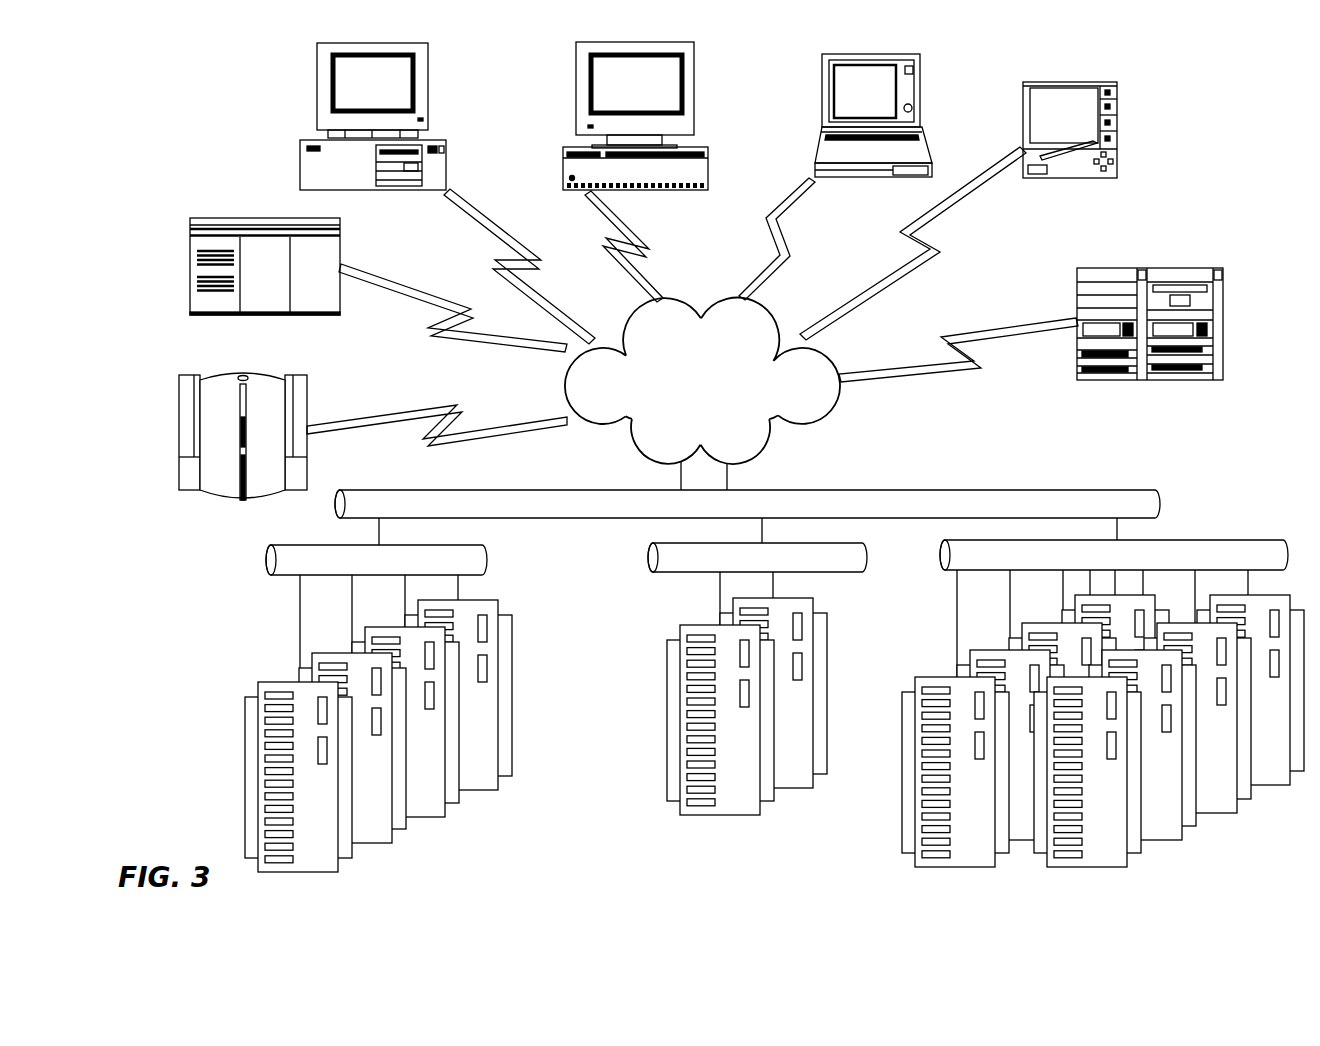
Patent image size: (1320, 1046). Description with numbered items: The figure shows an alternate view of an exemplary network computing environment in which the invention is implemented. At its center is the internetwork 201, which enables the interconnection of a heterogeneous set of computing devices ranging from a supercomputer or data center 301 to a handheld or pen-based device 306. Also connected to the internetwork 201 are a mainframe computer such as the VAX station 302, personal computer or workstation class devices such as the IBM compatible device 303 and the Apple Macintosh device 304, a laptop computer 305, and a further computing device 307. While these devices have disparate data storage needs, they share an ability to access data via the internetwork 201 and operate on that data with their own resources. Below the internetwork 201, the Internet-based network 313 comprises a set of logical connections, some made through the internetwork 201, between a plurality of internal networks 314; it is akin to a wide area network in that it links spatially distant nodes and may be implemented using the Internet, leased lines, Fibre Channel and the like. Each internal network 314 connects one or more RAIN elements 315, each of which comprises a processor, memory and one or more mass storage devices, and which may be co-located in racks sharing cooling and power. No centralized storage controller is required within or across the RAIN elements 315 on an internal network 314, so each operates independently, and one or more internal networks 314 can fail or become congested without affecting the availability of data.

The internetwork 201 is at (716, 388).
The supercomputer or data center 301 is at (178, 440).
The VAX station 302 is at (190, 263).
The IBM compatible device 303 is at (298, 160).
The Apple Macintosh device 304 is at (562, 160).
The laptop computer 305 is at (820, 118).
The handheld or pen-based device 306 is at (1022, 129).
The tower computer 307 is at (1232, 322).
The Internet-based network 313 is at (598, 519).
The internal network 314 is at (266, 561).
The RAIN element 315 is at (245, 780).